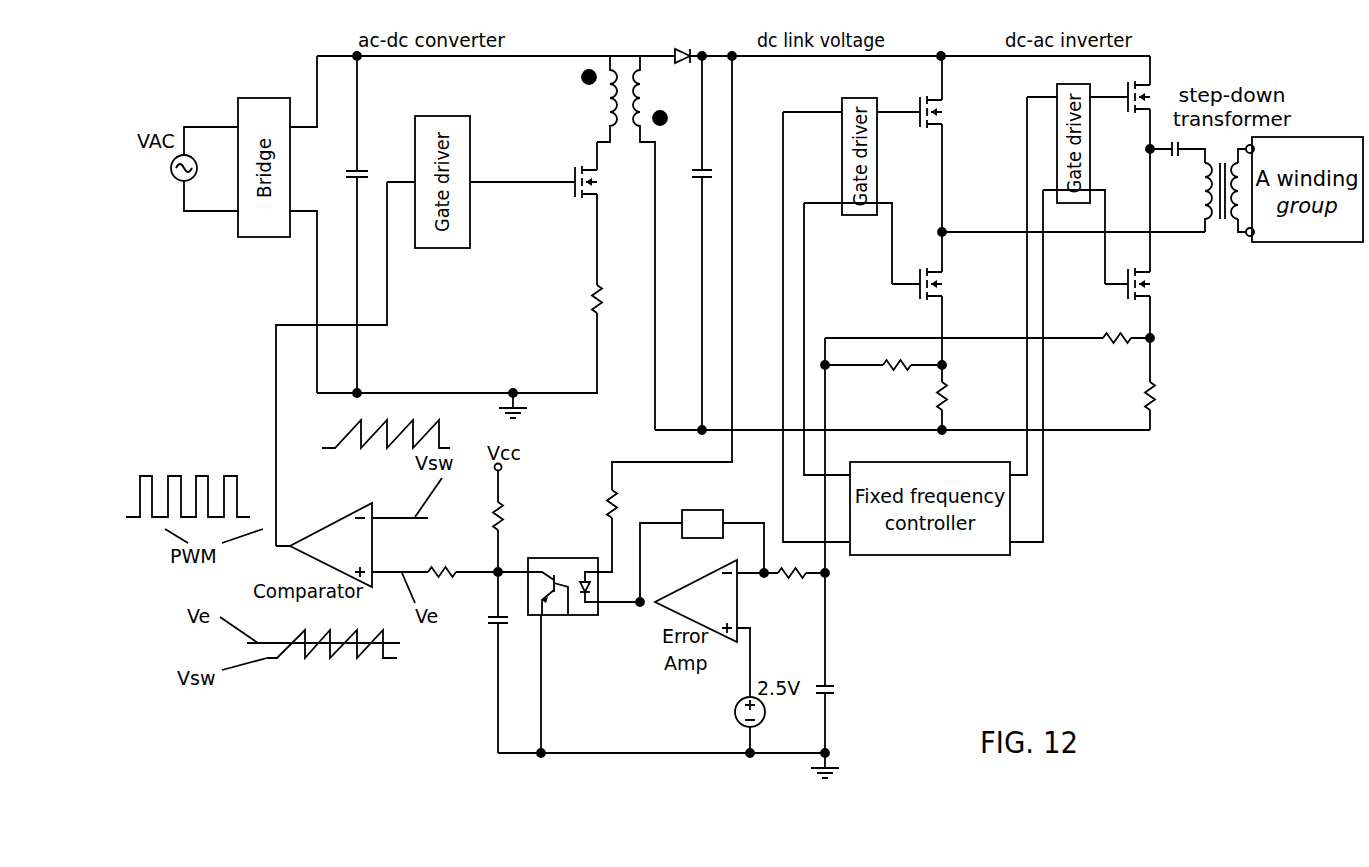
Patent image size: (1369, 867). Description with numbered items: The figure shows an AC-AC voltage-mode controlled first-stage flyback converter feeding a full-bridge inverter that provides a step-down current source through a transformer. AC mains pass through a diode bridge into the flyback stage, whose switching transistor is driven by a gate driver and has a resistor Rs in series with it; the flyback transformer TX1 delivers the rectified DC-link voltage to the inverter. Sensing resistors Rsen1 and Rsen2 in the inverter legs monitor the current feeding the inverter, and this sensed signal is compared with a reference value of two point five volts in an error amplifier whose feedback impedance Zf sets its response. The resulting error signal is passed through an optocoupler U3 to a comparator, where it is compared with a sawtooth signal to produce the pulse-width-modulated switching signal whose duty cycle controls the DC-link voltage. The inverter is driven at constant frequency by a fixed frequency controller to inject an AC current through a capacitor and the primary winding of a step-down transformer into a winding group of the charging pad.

The current sense resistor Rs is at (610, 339).
The sense resistor 1 Rsen1 is at (975, 394).
The sense resistor 2 Rsen2 is at (1183, 394).
The transformer TX1 is at (624, 229).
The optocoupler U3 is at (559, 643).
The feedback impedance Zf is at (702, 542).